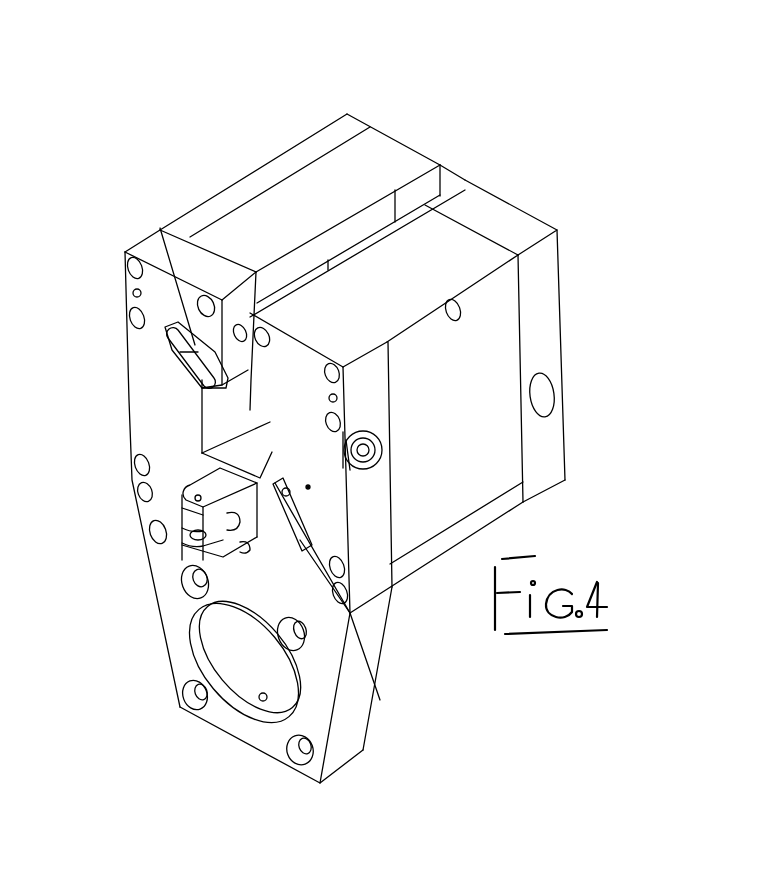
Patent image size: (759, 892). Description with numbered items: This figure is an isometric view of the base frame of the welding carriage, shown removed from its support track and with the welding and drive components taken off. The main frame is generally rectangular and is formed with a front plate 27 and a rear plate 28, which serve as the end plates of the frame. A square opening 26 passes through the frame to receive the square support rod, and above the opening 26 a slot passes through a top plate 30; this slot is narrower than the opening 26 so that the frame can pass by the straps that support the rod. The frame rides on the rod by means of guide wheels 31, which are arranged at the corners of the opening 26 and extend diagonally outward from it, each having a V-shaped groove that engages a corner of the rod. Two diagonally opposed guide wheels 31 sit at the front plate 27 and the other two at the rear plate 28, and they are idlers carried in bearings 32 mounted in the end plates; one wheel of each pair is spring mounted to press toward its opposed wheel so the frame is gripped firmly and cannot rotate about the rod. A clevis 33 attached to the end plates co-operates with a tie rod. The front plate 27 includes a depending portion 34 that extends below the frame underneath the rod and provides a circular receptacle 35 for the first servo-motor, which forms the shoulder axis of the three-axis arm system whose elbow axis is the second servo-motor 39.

The square opening 26 is at (200, 412).
The front plate 27 is at (325, 327).
The rear plate 28 is at (505, 218).
The top plate 30 is at (310, 188).
The guide wheels 31 is at (160, 228).
The bearings 32 is at (385, 457).
The clevis 33 is at (217, 488).
The depending portion 34 is at (231, 631).
The circular receptacle 35 is at (244, 703).
The second servo-motor 39 is at (367, 220).